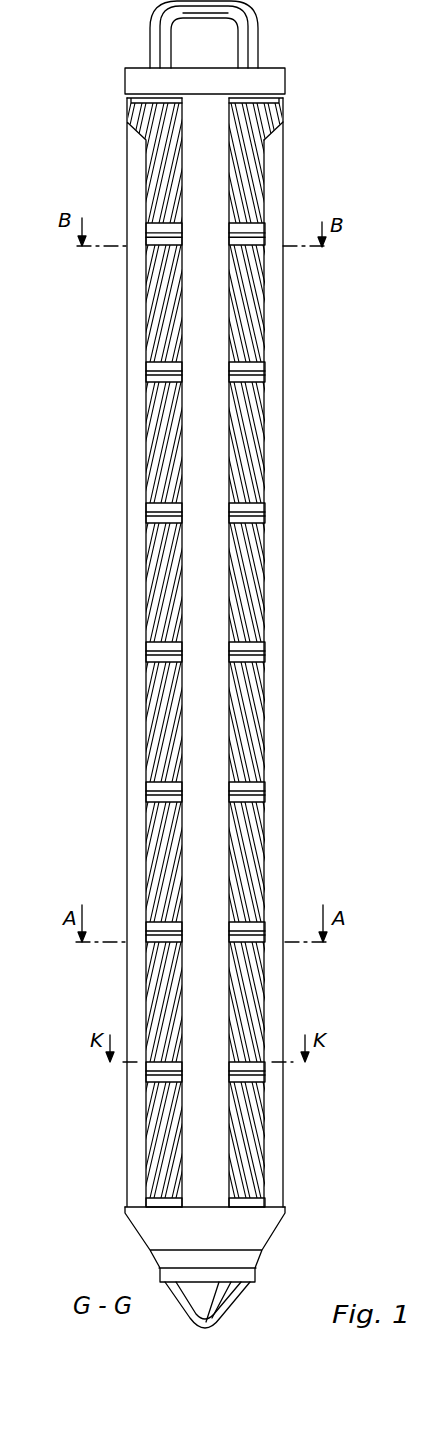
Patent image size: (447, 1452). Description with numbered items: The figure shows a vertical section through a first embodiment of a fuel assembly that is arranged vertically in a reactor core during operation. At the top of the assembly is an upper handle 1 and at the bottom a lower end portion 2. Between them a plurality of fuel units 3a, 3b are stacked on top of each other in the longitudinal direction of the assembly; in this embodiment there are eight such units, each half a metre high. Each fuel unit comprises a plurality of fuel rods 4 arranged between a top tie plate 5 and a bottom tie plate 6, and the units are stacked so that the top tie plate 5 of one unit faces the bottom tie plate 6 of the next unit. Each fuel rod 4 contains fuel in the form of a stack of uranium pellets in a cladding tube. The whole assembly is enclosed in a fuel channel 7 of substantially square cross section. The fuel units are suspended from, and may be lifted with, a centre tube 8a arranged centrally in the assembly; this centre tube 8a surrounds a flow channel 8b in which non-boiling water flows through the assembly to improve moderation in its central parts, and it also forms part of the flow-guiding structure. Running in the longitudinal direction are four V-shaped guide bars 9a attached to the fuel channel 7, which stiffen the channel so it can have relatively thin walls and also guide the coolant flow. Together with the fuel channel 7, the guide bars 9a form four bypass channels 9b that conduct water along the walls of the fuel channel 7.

The upper handle 1 is at (257, 32).
The lower end portion 2 is at (260, 1228).
The fuel unit 3a is at (162, 1021).
The fuel unit 3b is at (153, 417).
The fuel rod 4 is at (257, 1108).
The top tie plate 5 is at (257, 1075).
The bottom tie plate 6 is at (257, 1203).
The fuel channel 7 is at (284, 415).
The centre tube 8a is at (230, 582).
The flow channel 8b is at (212, 598).
The guide bar 9a is at (265, 715).
The bypass channel 9b is at (280, 748).